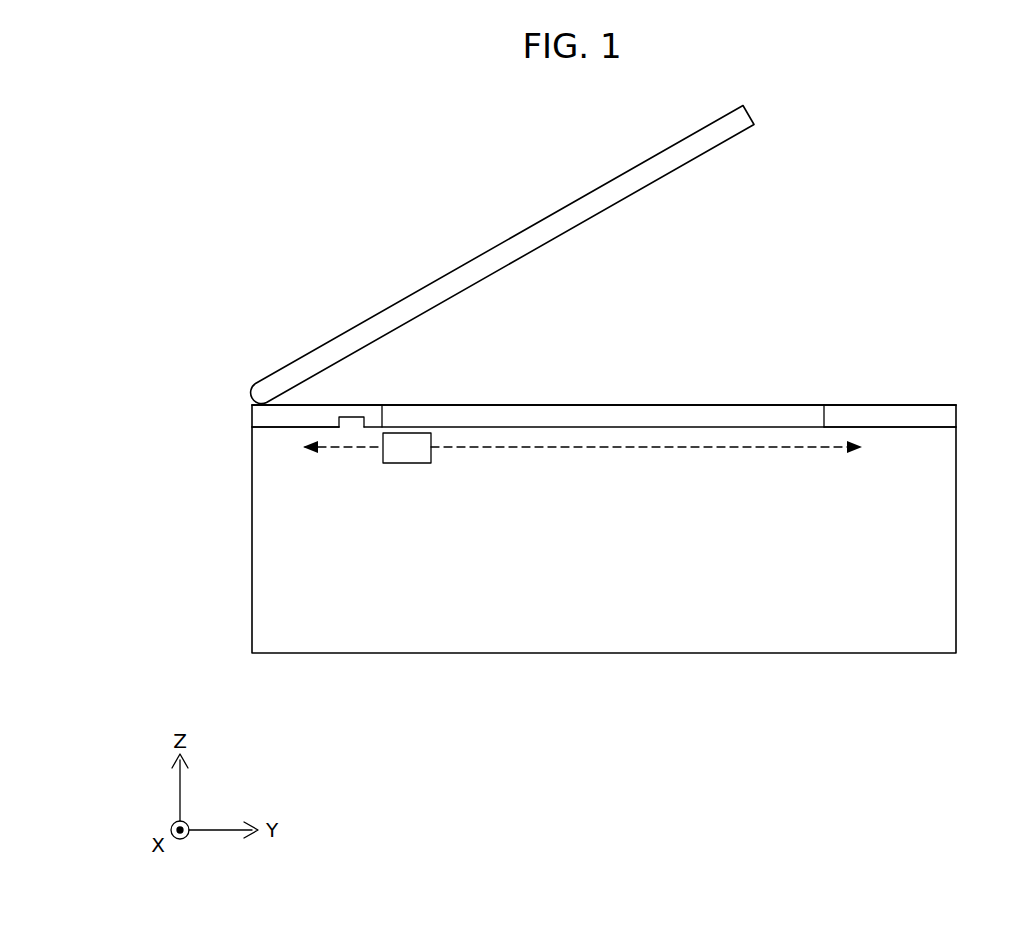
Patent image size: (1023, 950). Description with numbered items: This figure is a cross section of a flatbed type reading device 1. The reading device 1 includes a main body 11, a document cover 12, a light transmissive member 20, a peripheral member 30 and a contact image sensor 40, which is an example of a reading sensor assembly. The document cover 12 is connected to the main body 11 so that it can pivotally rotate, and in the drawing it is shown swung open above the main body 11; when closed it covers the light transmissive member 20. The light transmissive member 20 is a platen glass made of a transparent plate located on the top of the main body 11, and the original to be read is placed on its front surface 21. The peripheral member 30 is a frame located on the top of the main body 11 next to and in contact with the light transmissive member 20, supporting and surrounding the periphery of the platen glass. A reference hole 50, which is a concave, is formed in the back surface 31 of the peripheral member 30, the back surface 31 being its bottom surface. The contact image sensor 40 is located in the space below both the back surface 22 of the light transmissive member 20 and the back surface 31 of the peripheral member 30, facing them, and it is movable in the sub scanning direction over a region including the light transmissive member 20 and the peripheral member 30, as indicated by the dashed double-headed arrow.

The reading device 1 is at (902, 89).
The main body 11 is at (956, 521).
The document cover 12 is at (625, 177).
The light transmissive member 20 is at (499, 406).
The front surface 21 is at (605, 405).
The back surface 22 is at (603, 427).
The peripheral member 30 is at (342, 404).
The back surface 31 is at (288, 428).
The contact image sensor 40 is at (431, 455).
The reference hole 50 is at (353, 418).